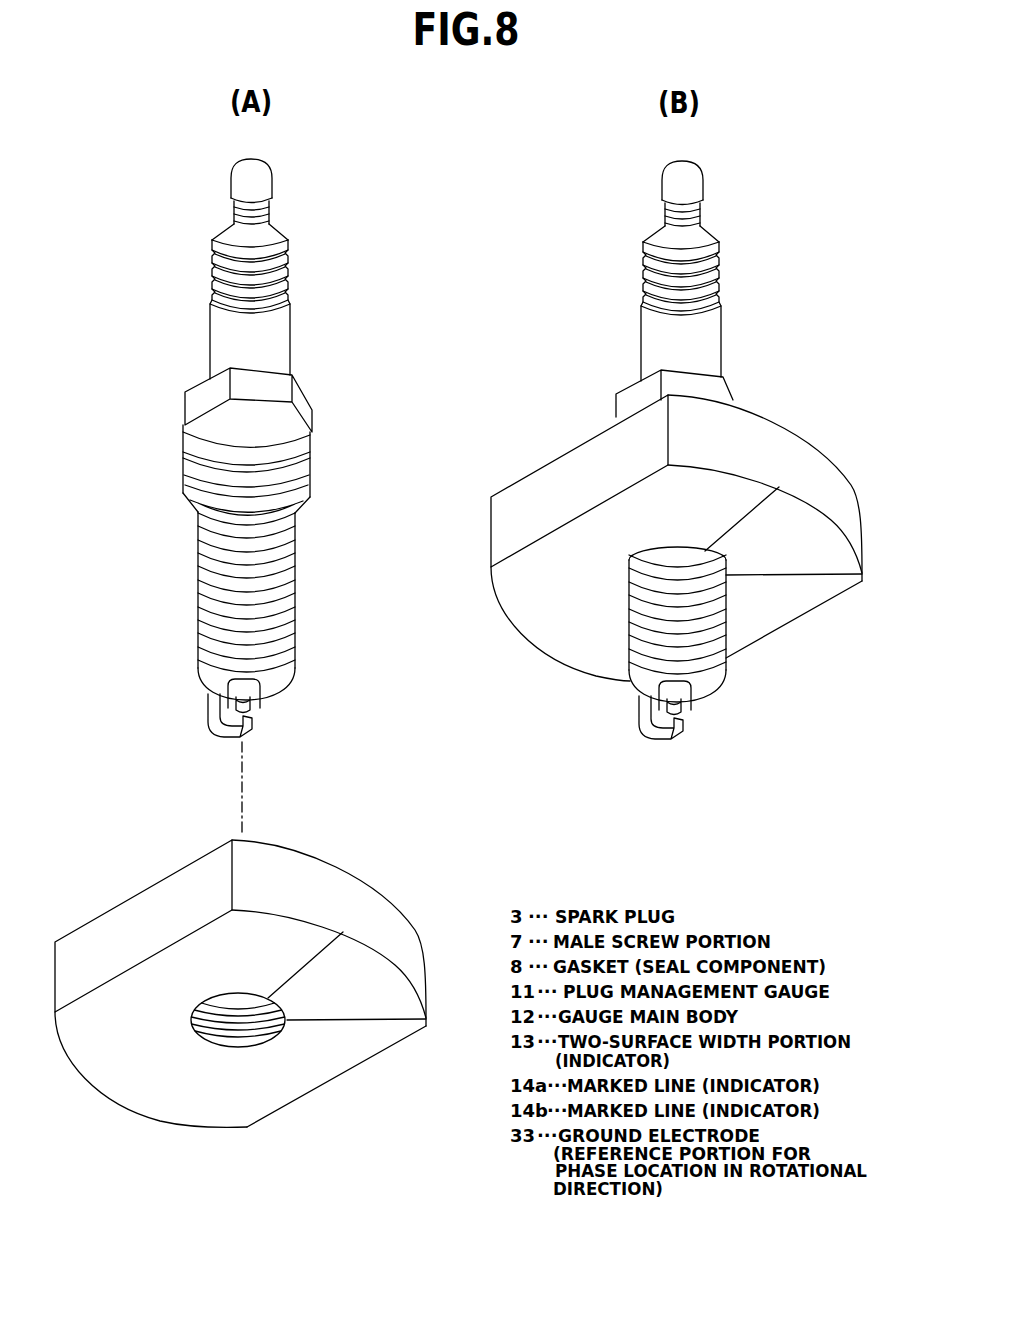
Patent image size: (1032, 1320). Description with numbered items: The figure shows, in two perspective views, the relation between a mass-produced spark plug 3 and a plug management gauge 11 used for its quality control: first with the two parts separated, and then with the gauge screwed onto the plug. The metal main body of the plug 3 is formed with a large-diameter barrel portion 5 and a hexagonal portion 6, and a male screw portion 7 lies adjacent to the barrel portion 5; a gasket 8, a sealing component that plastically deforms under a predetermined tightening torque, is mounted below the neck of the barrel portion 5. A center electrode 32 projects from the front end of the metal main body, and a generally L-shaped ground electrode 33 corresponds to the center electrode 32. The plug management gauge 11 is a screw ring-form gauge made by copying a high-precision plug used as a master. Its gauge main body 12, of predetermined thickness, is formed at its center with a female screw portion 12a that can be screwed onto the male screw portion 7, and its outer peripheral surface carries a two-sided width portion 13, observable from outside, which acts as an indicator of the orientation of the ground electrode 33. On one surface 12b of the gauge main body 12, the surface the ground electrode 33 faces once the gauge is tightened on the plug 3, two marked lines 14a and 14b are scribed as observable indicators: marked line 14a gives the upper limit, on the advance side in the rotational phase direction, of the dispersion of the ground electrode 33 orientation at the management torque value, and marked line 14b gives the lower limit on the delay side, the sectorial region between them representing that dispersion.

The plug 3 is at (462, 468).
The large-diameter barrel portion 5 is at (308, 452).
The hexagonal portion 6 is at (195, 403).
The male screw portion 7 is at (202, 593).
The gasket 8 is at (188, 485).
The plug management gauge 11 is at (458, 767).
The gauge main body 12 is at (387, 903).
The female screw portion 12a is at (236, 1032).
The one surface 12b is at (168, 1093).
The two-sided width portion 13 is at (153, 903).
The marked line 14a is at (308, 955).
The marked line 14b is at (350, 1019).
The center electrode 32 is at (253, 693).
The ground electrode 33 is at (223, 725).